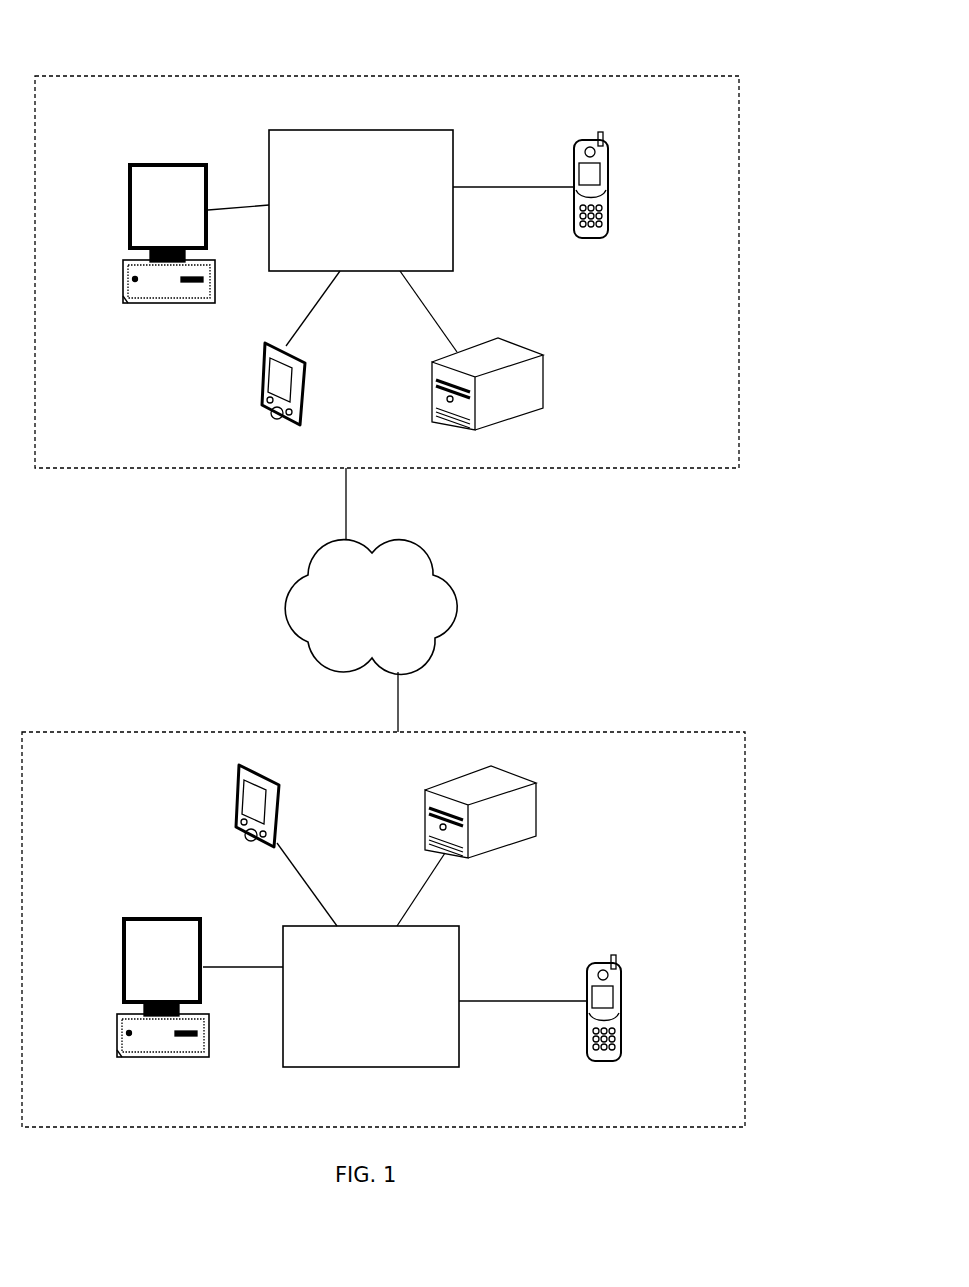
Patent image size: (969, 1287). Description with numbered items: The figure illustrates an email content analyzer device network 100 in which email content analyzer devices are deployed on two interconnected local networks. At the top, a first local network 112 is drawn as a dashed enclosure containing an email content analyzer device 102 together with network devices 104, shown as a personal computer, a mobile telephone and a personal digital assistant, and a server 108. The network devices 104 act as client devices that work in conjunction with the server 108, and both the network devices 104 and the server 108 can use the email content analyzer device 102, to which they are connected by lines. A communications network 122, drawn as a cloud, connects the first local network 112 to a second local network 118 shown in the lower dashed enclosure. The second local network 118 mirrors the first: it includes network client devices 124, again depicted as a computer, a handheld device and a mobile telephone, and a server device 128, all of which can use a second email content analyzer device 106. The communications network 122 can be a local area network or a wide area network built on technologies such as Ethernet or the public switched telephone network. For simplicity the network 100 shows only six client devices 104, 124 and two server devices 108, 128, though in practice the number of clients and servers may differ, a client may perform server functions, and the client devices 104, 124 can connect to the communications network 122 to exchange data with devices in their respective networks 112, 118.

The network 100 is at (94, 22).
The email content analyzer device 102 is at (454, 155).
The network devices 104 is at (124, 222).
The email content analyzer device 106 is at (462, 1040).
The server 108 is at (545, 383).
The first local network 112 is at (76, 470).
The second local network 118 is at (81, 731).
The communications network 122 is at (411, 540).
The network client devices 124 is at (121, 977).
The server device 128 is at (540, 810).